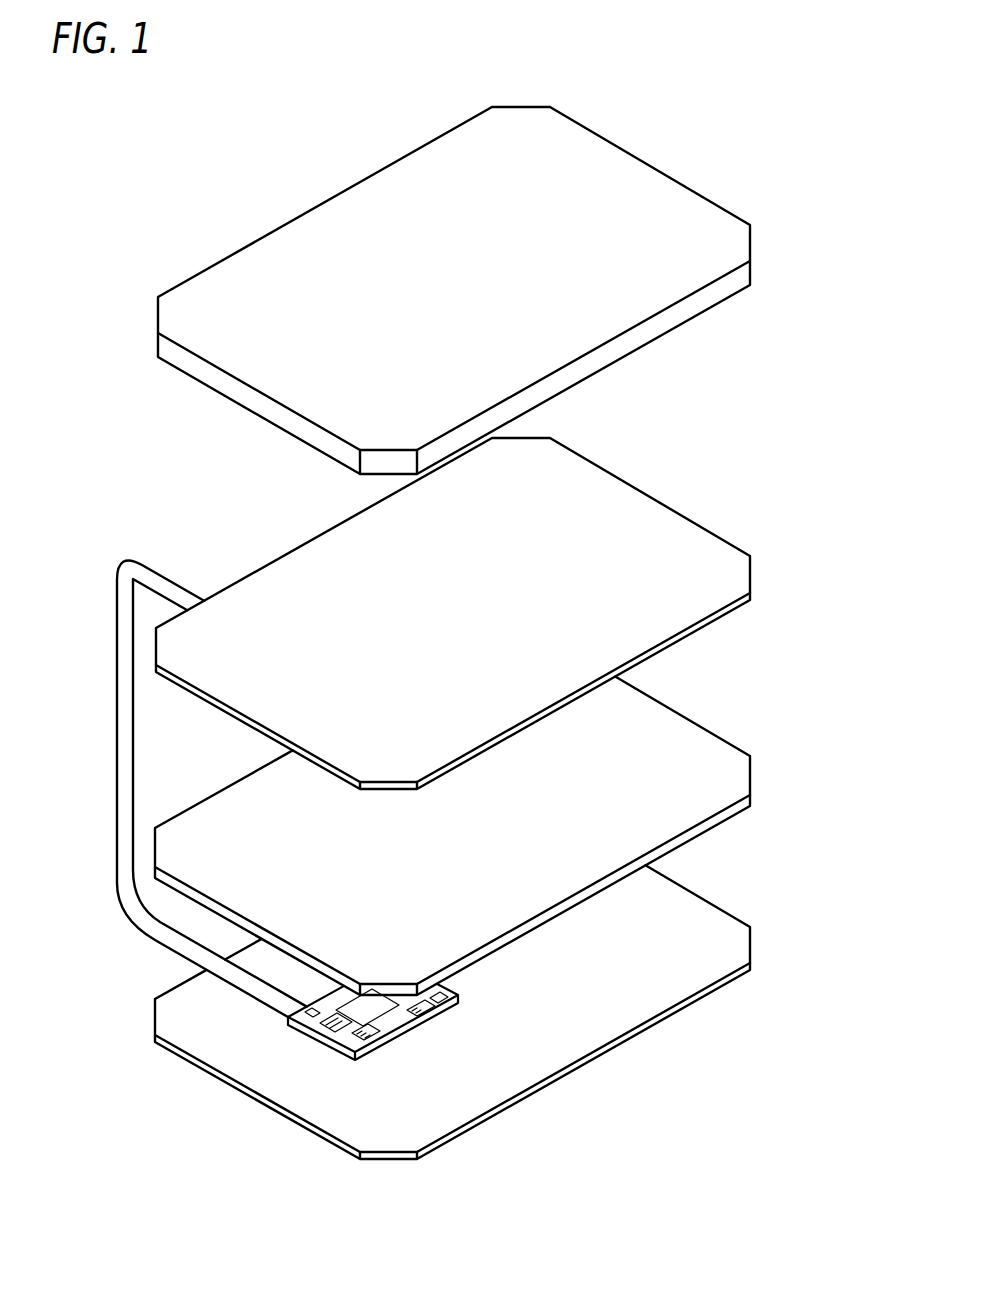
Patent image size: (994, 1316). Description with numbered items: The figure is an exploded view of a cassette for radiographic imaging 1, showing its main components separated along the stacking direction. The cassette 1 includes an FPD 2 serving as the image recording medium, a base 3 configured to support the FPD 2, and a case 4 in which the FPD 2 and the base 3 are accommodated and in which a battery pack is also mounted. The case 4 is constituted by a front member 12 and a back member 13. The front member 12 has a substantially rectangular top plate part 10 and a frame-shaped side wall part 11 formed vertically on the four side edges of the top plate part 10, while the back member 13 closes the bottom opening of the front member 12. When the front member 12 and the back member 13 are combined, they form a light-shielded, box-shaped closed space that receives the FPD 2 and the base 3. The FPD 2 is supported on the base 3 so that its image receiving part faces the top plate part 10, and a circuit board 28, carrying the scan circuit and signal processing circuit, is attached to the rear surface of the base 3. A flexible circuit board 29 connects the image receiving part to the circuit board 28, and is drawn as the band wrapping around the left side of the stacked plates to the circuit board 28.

The cassette for radiographic imaging 1 is at (778, 108).
The FPD 2 is at (280, 548).
The base 3 is at (217, 785).
The case 4 is at (506, 630).
The top plate part 10 is at (607, 164).
The side wall part 11 is at (660, 323).
The front member 12 is at (760, 277).
The back member 13 is at (758, 913).
The circuit board 28 is at (318, 1035).
The flexible cable 29 is at (117, 785).